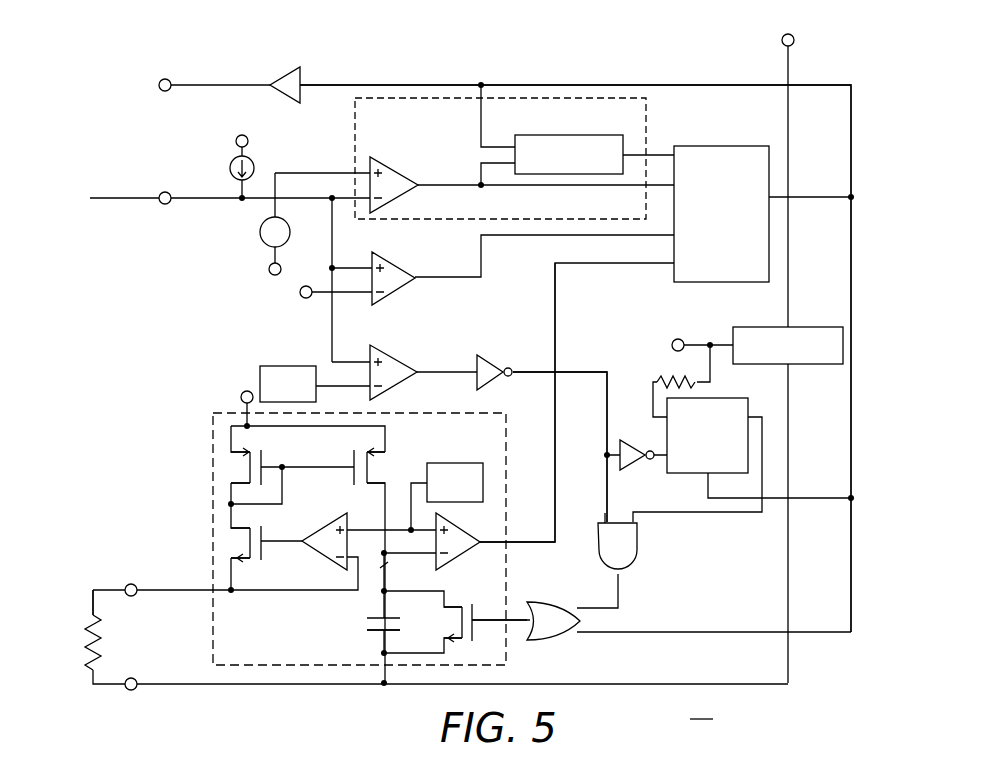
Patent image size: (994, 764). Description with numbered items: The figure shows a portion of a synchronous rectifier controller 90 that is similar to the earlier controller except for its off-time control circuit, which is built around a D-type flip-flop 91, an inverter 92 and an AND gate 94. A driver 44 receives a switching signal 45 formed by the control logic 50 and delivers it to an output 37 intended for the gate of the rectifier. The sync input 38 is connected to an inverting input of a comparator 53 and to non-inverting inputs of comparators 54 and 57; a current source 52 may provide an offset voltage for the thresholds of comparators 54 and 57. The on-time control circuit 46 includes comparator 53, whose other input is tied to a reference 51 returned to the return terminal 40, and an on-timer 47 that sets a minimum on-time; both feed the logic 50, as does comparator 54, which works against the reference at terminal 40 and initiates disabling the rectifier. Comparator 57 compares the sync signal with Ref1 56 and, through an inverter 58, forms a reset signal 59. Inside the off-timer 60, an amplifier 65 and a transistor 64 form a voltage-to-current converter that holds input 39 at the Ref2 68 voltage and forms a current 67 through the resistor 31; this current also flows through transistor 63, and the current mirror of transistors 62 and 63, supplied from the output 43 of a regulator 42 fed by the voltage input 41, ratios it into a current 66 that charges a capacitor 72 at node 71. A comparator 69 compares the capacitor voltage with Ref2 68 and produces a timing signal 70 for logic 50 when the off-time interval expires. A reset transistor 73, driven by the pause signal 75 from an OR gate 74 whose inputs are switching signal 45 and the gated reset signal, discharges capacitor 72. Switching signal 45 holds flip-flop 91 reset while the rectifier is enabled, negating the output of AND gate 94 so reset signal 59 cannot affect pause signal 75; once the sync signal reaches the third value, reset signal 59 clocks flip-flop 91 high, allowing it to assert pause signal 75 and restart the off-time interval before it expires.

The resistor 31 is at (92, 638).
The output 37 is at (165, 78).
The sync input 38 is at (165, 191).
The input 39 is at (126, 585).
The return terminal 40 is at (270, 278).
The voltage input 41 is at (793, 35).
The regulator 42 is at (749, 327).
The regulator output 43 is at (249, 142).
The driver 44 is at (270, 80).
The switching signal 45 is at (345, 85).
The on-time control circuit 46 is at (356, 118).
The on-timer 47 is at (566, 135).
The control logic 50 is at (735, 146).
The reference 51 is at (259, 232).
The current source 52 is at (239, 178).
The comparator 53 is at (403, 172).
The comparator 54 is at (392, 295).
The Ref1 56 is at (297, 365).
The comparator 57 is at (398, 388).
The inverter 58 is at (500, 384).
The reset signal 59 is at (609, 397).
The off-timer 60 is at (212, 462).
The transistor 62 is at (354, 477).
The transistor 63 is at (265, 465).
The transistor 64 is at (264, 534).
The amplifier 65 is at (330, 563).
The current 66 is at (390, 566).
The current 67 is at (91, 606).
The Ref2 68 is at (445, 464).
The comparator 69 is at (455, 555).
The timing signal 70 is at (560, 547).
The node 71 is at (384, 597).
The capacitor 72 is at (380, 630).
The reset transistor 73 is at (473, 632).
The OR gate 74 is at (574, 634).
The pause signal 75 is at (514, 619).
The synchronous rectifier controller 90 is at (701, 710).
The D-type flip-flop 91 is at (712, 408).
The inverter 92 is at (640, 441).
The AND gate 94 is at (637, 567).